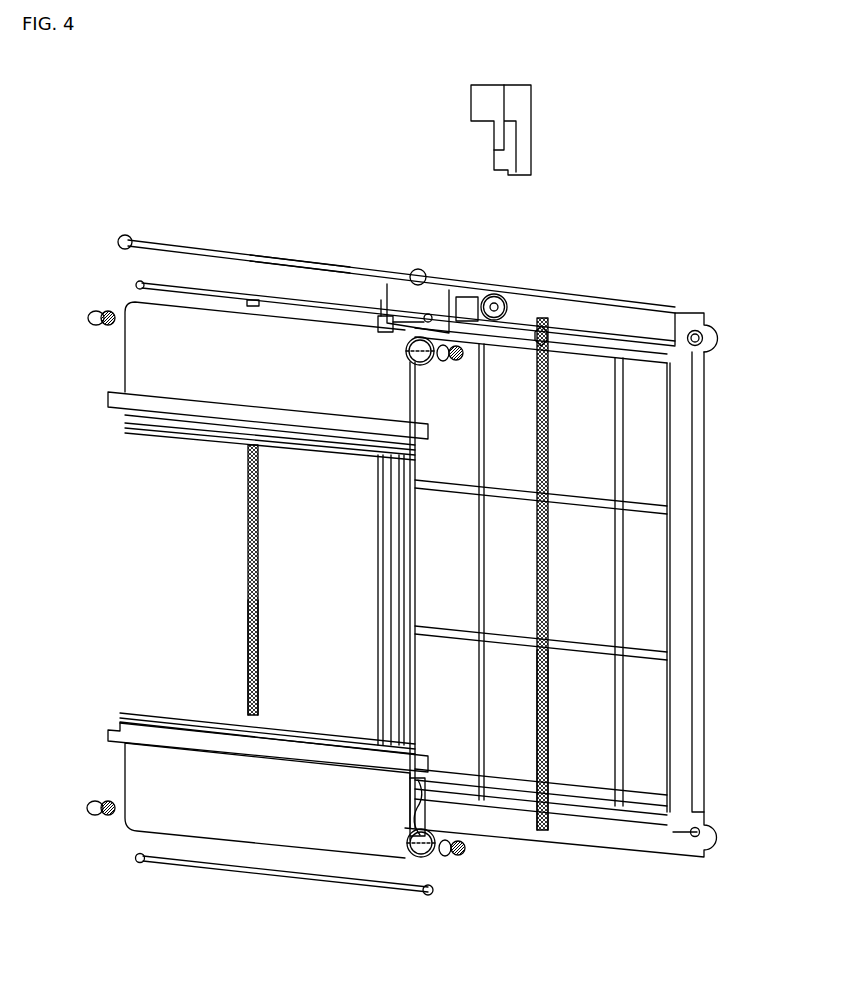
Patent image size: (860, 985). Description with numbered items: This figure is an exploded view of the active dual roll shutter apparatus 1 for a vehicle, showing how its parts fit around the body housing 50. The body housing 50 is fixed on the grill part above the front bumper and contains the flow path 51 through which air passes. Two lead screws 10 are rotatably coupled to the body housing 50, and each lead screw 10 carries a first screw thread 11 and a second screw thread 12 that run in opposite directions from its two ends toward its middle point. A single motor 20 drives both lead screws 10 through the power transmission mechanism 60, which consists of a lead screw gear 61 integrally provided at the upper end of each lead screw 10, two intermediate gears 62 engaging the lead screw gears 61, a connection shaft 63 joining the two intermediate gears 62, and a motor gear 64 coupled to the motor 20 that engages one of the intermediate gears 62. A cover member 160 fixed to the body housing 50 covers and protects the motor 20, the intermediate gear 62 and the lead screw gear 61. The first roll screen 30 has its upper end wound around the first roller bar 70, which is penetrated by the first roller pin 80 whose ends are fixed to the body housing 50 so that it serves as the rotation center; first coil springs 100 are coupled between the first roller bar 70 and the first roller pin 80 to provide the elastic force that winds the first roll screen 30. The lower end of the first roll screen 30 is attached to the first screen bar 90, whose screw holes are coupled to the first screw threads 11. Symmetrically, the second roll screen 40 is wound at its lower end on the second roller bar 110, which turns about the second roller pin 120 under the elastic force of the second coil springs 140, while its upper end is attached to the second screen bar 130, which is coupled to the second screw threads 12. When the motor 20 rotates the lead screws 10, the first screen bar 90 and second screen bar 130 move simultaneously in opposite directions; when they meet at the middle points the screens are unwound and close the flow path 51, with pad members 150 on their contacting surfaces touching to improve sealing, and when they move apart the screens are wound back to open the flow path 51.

The active dual roll shutter apparatus 1 is at (715, 300).
The lead screw 10 is at (250, 588).
The first screw thread 11 is at (247, 525).
The second screw thread 12 is at (247, 637).
The motor 20 is at (466, 297).
The first roll screen 30 is at (140, 357).
The second roll screen 40 is at (205, 818).
The body housing 50 is at (698, 602).
The flow path 51 is at (585, 752).
The power transmission mechanism 60 is at (192, 241).
The lead screw gear 61 is at (255, 298).
The intermediate gear 62 is at (126, 235).
The connection shaft 63 is at (297, 253).
The motor gear 64 is at (500, 296).
The first roller bar 70 is at (440, 366).
The first roller pin 80 is at (356, 314).
The first screen bar 90 is at (108, 397).
The first coil spring 100 is at (94, 310).
The second roller bar 110 is at (420, 857).
The second roller pin 120 is at (276, 880).
The second screen bar 130 is at (108, 733).
The second coil spring 140 is at (100, 820).
The pad member 150 is at (122, 428).
The cover member 160 is at (531, 100).